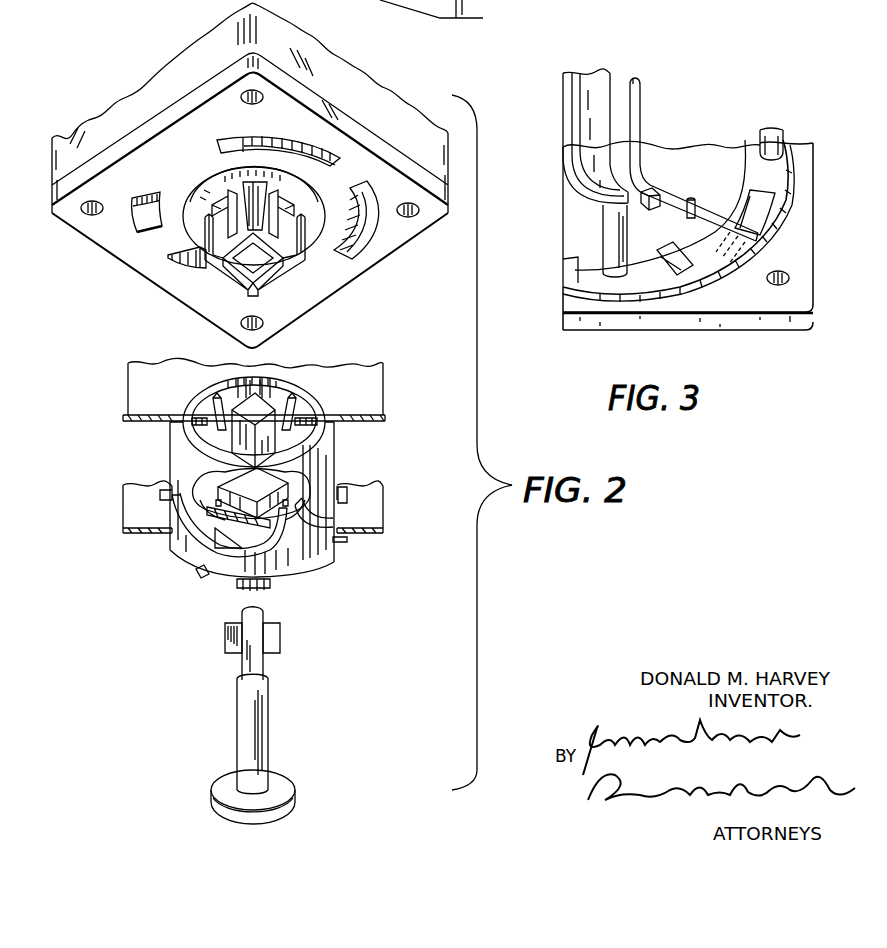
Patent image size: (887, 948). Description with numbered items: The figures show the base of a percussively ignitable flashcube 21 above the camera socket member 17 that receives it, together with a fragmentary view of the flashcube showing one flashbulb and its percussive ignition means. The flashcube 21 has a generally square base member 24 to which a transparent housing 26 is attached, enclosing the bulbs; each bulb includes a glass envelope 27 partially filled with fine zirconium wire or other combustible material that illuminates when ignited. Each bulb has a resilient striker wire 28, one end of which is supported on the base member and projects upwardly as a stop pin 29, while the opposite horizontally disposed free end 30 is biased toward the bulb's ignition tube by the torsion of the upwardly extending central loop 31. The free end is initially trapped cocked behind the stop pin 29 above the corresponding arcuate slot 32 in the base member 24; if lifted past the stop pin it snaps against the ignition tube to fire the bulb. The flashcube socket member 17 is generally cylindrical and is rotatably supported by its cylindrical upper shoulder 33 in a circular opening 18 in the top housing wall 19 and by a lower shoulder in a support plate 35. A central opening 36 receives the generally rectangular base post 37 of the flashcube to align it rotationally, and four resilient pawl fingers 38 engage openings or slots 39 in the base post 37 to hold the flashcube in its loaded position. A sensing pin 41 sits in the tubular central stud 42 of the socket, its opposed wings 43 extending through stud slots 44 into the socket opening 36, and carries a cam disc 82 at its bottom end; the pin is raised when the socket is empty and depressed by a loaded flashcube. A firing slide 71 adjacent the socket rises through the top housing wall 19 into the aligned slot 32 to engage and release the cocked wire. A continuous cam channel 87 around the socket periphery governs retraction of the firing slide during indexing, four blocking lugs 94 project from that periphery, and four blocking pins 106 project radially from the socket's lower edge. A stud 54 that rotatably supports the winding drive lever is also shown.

In FIG. 2, the flashcube socket member 17 is at (340, 457).
In FIG. 2, the circular opening 18 is at (318, 415).
In FIG. 2, the top housing wall 19 is at (365, 372).
In FIG. 2, the percussively ignitable flashcube 21 is at (137, 102).
In FIG. 3, the percussively ignitable flashcube 21 is at (562, 212).
In FIG. 2, the base member 24 is at (456, 196).
In FIG. 3, the base member 24 is at (790, 322).
In FIG. 2, the transparent housing 26 is at (380, 100).
In FIG. 3, the glass envelope 27 is at (585, 80).
In FIG. 3, the resilient striker wire 28 is at (640, 105).
In FIG. 3, the stop pin 29 is at (690, 198).
In FIG. 2, the free end of the striker wire 30 is at (125, 197).
In FIG. 3, the free end of the striker wire 30 is at (745, 255).
In FIG. 3, the central loop 31 is at (633, 75).
In FIG. 2, the arcuate slot 32 is at (273, 142).
In FIG. 3, the arcuate slot 32 is at (745, 196).
In FIG. 2, the cylindrical upper shoulder 33 is at (183, 433).
In FIG. 2, the support plate 35 is at (373, 500).
In FIG. 2, the central opening 36 is at (273, 397).
In FIG. 2, the base post 37 is at (287, 267).
In FIG. 2, the resilient pawl fingers 38 is at (214, 397).
In FIG. 2, the openings or slots 39 is at (203, 193).
In FIG. 2, the sensing pin 41 is at (266, 705).
In FIG. 2, the tubular central stud 42 is at (257, 397).
In FIG. 2, the opposed wings 43 is at (232, 640).
In FIG. 2, the stud slots 44 is at (220, 480).
In FIG. 2, the stud 54 is at (261, 588).
In FIG. 3, the firing slide 71 is at (732, 270).
In FIG. 2, the cam disc 82 is at (283, 783).
In FIG. 2, the cam channel 87 is at (180, 527).
In FIG. 2, the blocking lugs 94 is at (170, 493).
In FIG. 2, the blocking pins 106 is at (192, 582).